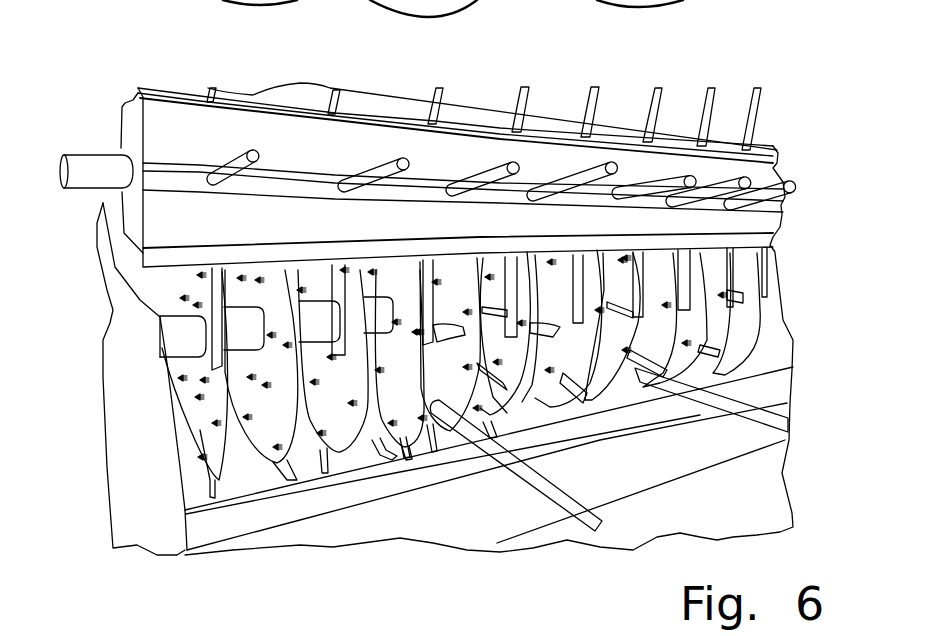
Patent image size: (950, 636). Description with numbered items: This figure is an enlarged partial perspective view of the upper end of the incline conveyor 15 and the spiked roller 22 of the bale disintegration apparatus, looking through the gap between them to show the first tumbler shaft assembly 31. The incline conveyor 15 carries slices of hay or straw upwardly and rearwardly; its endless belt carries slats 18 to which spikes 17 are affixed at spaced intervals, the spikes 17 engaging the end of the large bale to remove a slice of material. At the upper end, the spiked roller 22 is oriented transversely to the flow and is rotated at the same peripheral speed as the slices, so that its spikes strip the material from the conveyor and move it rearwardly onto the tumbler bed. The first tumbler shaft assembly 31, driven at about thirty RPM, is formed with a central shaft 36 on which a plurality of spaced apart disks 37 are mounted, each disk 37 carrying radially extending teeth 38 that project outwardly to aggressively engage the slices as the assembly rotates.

The spiked roller 22 is at (178, 138).
The central shaft 36 is at (190, 337).
The first tumbler shaft assembly 31 is at (163, 397).
The disk 37 is at (267, 433).
The teeth 38 is at (373, 447).
The incline conveyor 15 is at (587, 530).
The spikes 17 is at (740, 415).
The slats 18 is at (752, 483).